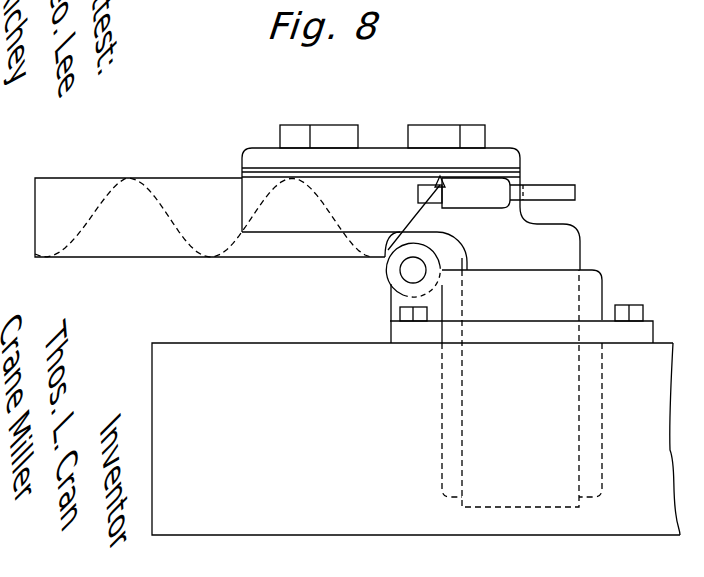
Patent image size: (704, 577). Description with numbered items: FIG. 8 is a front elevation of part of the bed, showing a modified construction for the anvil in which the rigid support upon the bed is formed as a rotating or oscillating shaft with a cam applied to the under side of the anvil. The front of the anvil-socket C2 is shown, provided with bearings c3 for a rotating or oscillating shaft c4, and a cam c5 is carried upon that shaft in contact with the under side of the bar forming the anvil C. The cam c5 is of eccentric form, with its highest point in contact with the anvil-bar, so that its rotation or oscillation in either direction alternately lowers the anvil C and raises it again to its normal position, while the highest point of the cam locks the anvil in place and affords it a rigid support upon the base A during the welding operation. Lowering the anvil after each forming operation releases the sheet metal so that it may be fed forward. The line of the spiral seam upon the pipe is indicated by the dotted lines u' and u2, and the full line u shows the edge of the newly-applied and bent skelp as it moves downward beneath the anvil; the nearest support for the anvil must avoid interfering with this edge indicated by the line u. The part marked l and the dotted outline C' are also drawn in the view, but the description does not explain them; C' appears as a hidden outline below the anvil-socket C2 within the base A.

The base A is at (416, 439).
The anvil C is at (381, 178).
The dotted line of spiral seam u' is at (210, 217).
The dotted line of spiral seam u2 is at (83, 212).
The line of skelp edge u is at (416, 213).
The bolt l is at (496, 193).
The anvil-socket C2 is at (523, 274).
The cam c5 is at (443, 248).
The bearings c3 is at (393, 291).
The rotating or oscillating shaft c4 is at (401, 270).
The hidden housing C' is at (522, 388).